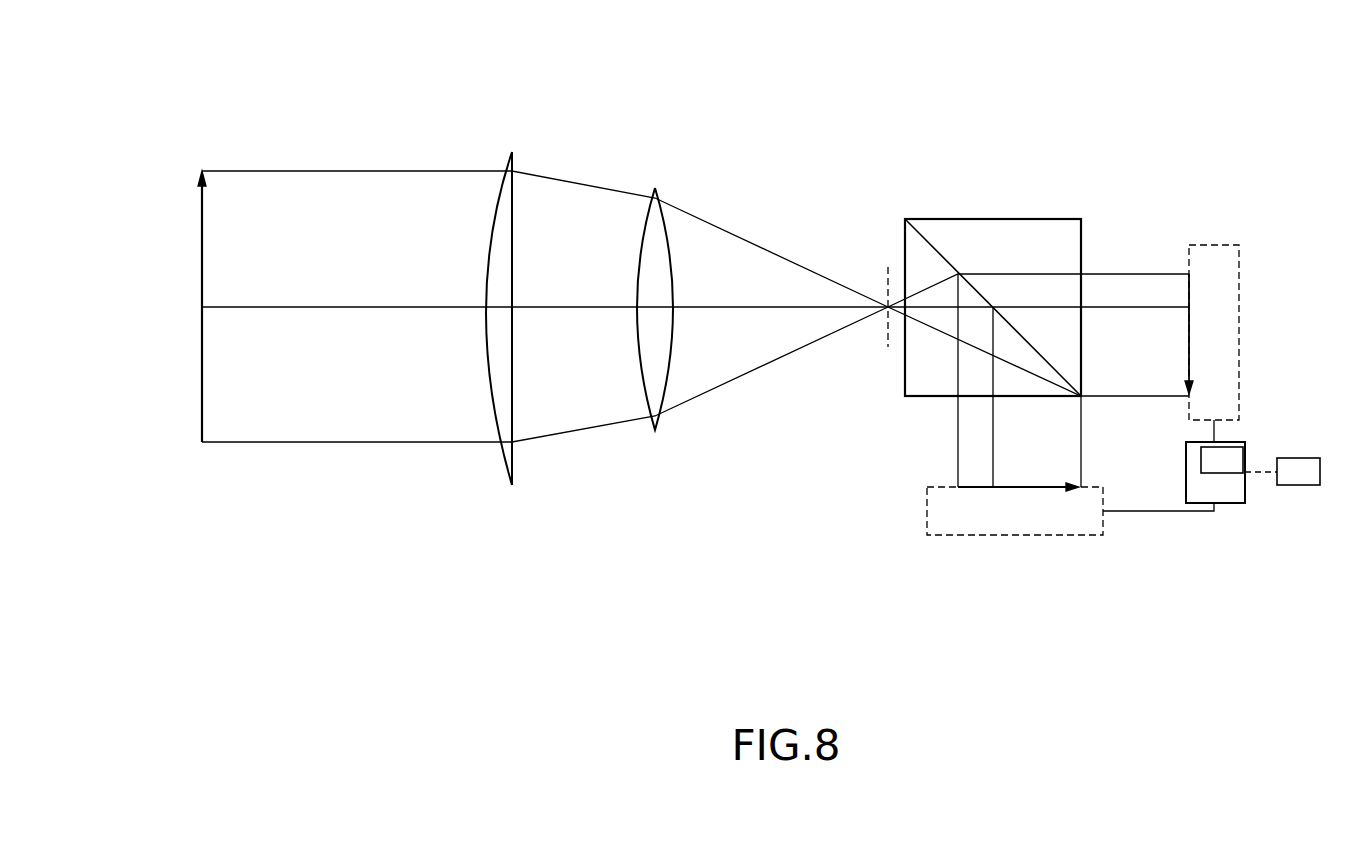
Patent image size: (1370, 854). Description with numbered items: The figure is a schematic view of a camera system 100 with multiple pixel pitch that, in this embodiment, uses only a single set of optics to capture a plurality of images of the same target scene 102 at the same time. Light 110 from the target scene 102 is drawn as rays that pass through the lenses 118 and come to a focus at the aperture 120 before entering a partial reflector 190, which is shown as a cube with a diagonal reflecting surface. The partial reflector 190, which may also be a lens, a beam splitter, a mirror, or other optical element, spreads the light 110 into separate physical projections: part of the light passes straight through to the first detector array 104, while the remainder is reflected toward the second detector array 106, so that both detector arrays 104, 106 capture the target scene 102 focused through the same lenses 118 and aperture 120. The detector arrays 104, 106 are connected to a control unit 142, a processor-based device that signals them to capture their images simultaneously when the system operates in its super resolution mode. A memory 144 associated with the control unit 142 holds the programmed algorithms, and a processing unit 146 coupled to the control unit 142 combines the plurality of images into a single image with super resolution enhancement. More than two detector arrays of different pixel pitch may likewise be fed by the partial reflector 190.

The camera system 100 is at (790, 125).
The target scene 102 is at (186, 231).
The first detector array 104 is at (927, 512).
The second detector array 106 is at (1214, 245).
The light 110 is at (270, 171).
The lenses 118 is at (508, 167).
The aperture 120 is at (888, 268).
The control unit 142 is at (1192, 498).
The memory 144 is at (1207, 470).
The processing unit 146 is at (1283, 482).
The partial reflector 190 is at (993, 219).